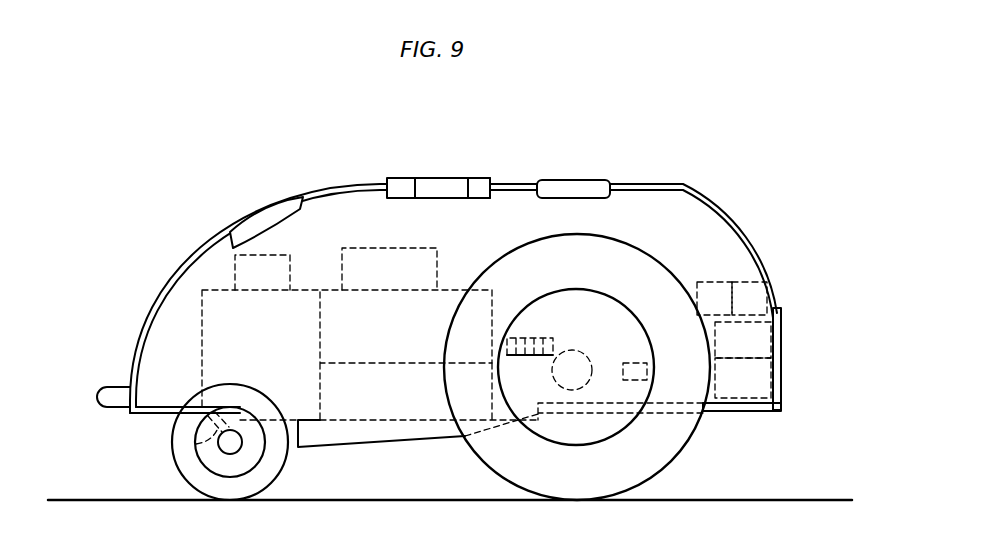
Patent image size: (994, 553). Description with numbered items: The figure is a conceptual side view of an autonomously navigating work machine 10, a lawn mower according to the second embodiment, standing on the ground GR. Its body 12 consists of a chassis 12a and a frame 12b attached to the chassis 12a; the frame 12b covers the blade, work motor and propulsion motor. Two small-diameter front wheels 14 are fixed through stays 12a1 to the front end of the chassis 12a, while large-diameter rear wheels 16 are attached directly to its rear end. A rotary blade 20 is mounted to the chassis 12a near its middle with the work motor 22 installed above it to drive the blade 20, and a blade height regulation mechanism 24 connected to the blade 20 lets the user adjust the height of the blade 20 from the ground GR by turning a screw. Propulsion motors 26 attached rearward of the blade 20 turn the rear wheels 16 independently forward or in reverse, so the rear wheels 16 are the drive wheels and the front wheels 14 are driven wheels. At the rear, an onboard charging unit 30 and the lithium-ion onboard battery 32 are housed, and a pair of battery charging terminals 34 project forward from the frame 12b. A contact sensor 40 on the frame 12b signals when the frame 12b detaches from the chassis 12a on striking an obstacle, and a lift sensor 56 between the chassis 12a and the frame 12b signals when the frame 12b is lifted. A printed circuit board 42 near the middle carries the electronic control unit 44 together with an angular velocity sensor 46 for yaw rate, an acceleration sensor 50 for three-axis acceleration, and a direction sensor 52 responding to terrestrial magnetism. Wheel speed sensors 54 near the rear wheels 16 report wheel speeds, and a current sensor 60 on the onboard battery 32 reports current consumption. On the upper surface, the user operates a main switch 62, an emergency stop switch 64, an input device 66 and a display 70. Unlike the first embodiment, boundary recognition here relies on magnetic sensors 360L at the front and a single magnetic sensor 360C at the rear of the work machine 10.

The autonomously navigating work machine 10 is at (733, 184).
The body 12 is at (729, 361).
The chassis 12a is at (781, 392).
The stays 12a1 is at (196, 444).
The frame 12b is at (781, 295).
The front wheels 14 is at (180, 472).
The rear wheels 16 is at (468, 450).
The blade 20 is at (421, 404).
The work motor 22 is at (421, 337).
The blade height regulation mechanism 24 is at (405, 281).
The propulsion motors 26 is at (581, 352).
The onboard charging unit 30 is at (758, 354).
The onboard battery 32 is at (758, 392).
The battery charging terminals 34 is at (122, 387).
The contact sensor 40 is at (278, 288).
The printed circuit board 42 is at (527, 362).
The electronic control unit 44 is at (509, 340).
The angular velocity sensor 46 is at (525, 337).
The acceleration sensor 50 is at (535, 338).
The direction sensor 52 is at (553, 338).
The wheel speed sensors 54 is at (643, 363).
The lift sensor 56 is at (765, 312).
The current sensor 60 is at (730, 312).
The main switch 62 is at (430, 165).
The emergency stop switch 64 is at (402, 183).
The input device 66 is at (478, 183).
The display 70 is at (447, 185).
The magnetic sensor 360L is at (263, 223).
The magnetic sensor 360C is at (580, 180).
The ground GR is at (717, 498).